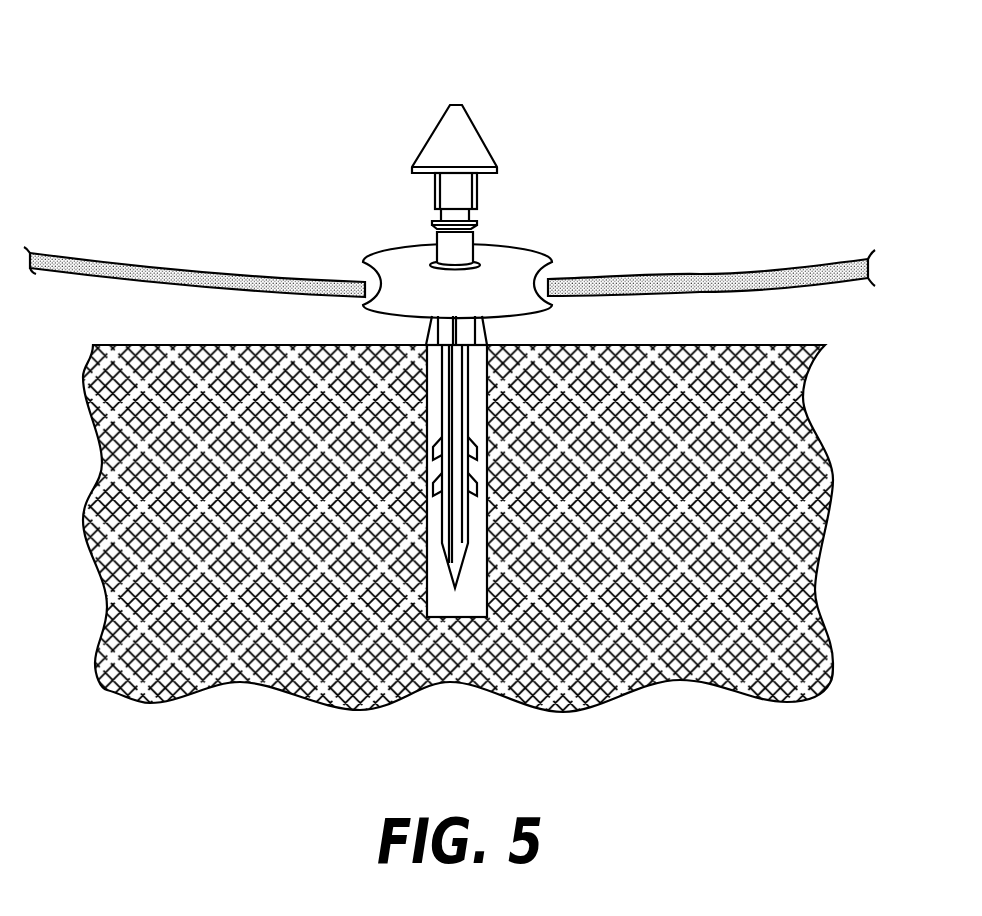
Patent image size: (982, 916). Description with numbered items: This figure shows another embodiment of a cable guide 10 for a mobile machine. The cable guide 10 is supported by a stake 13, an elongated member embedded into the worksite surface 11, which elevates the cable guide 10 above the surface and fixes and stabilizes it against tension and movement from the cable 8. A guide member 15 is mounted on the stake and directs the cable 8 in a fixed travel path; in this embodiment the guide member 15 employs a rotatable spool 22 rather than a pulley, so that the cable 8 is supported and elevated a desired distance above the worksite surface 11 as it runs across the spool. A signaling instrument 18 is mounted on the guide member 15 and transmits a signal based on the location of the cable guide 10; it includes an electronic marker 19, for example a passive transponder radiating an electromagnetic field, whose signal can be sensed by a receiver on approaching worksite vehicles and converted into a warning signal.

The cable 8 is at (217, 270).
The cable guide 10 is at (400, 304).
The worksite surface 11 is at (220, 345).
The stake 13 is at (457, 395).
The guide member 15 is at (363, 321).
The signaling instrument 18 is at (433, 159).
The electronic marker 19 is at (458, 140).
The rotatable spool 22 is at (543, 262).